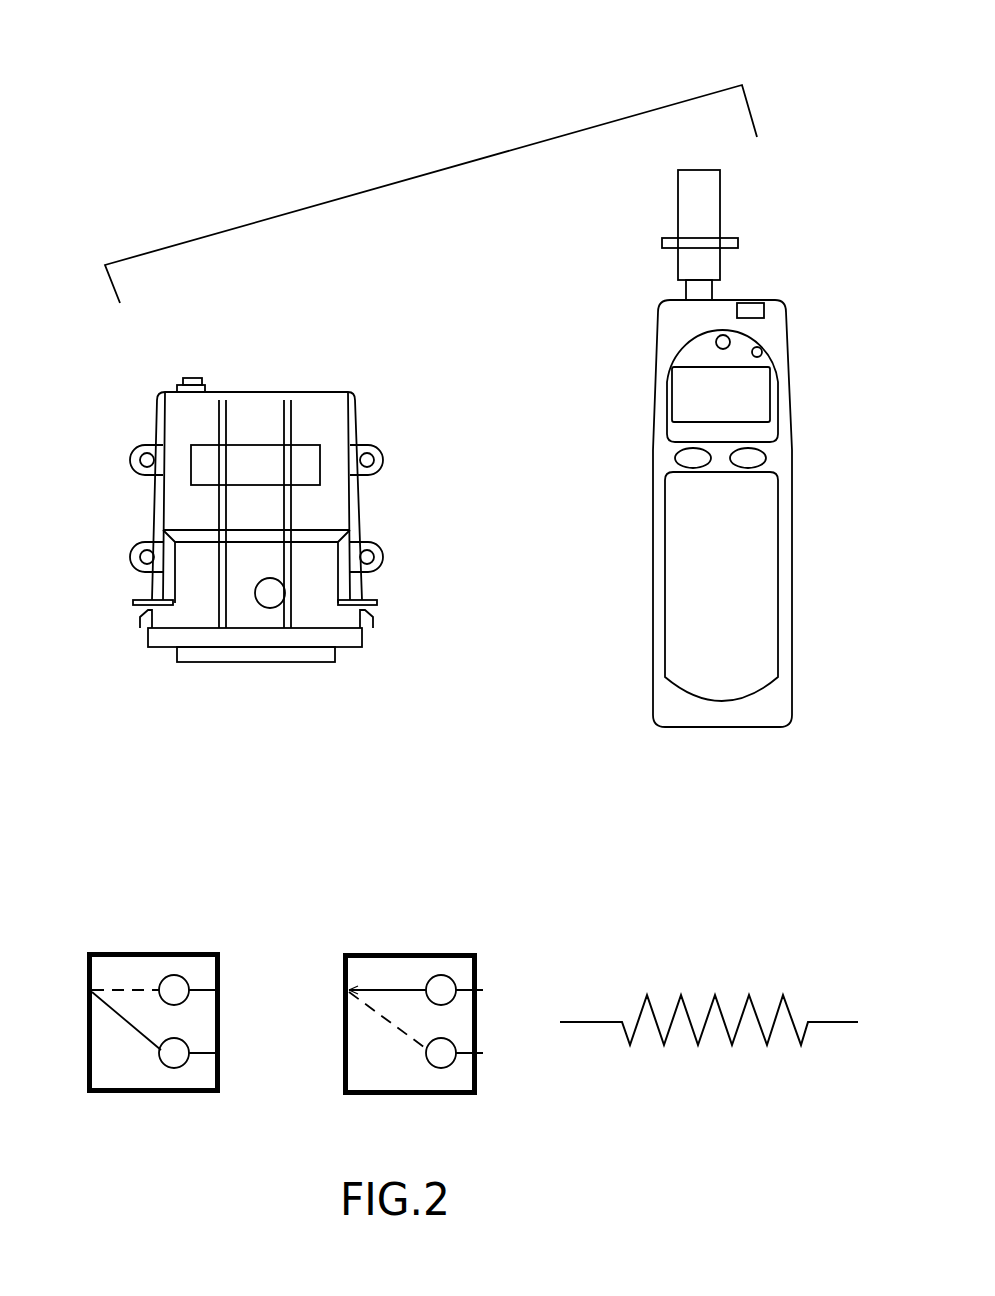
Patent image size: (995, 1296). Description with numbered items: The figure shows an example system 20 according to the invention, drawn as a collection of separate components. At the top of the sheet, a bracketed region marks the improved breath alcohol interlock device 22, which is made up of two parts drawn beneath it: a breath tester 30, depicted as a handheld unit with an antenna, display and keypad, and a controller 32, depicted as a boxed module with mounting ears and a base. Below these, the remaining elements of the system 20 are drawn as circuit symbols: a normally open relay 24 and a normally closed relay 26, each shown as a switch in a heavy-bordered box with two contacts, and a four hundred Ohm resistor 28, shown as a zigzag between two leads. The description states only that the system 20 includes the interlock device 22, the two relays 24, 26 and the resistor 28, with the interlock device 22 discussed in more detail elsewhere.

The system 20 is at (224, 118).
The breath alcohol interlock device 22 is at (431, 194).
The normally open relay 24 is at (147, 925).
The normally closed relay 26 is at (400, 934).
The 400 Ohm resistor 28 is at (697, 970).
The breath tester 30 is at (617, 384).
The controller 32 is at (383, 398).